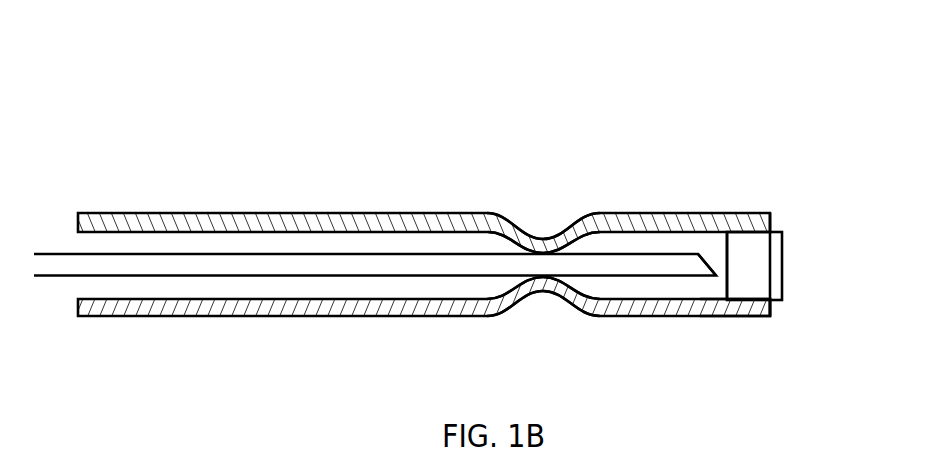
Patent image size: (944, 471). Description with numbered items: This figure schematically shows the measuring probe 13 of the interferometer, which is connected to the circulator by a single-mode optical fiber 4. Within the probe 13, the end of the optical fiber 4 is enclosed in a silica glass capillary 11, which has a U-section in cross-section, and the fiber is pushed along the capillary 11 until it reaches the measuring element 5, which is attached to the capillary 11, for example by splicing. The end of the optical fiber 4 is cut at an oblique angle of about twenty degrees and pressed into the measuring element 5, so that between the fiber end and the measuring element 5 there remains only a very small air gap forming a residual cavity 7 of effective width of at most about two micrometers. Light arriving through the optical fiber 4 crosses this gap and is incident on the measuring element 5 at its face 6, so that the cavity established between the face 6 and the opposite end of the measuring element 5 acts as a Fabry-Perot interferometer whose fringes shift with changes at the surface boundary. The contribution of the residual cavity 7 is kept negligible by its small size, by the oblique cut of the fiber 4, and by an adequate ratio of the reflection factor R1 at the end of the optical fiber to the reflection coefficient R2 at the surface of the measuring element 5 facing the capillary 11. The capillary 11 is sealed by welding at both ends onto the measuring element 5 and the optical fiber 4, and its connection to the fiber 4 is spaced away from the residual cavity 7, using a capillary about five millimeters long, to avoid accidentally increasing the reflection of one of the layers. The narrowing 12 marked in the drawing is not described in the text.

The measuring probe 13 is at (448, 190).
The capillary 11 is at (420, 217).
The constriction 12 is at (558, 228).
The optical fiber 4 is at (375, 313).
The measuring element 5 is at (798, 224).
The face 6 is at (795, 291).
The residual cavity 7 is at (751, 334).
The reflection factor at the end of the optical fiber R1 is at (694, 215).
The reflection coefficient from the surface of the measuring element facing the capi R2 is at (752, 258).